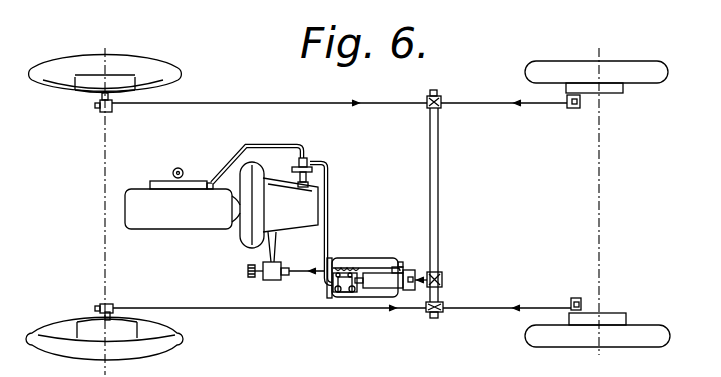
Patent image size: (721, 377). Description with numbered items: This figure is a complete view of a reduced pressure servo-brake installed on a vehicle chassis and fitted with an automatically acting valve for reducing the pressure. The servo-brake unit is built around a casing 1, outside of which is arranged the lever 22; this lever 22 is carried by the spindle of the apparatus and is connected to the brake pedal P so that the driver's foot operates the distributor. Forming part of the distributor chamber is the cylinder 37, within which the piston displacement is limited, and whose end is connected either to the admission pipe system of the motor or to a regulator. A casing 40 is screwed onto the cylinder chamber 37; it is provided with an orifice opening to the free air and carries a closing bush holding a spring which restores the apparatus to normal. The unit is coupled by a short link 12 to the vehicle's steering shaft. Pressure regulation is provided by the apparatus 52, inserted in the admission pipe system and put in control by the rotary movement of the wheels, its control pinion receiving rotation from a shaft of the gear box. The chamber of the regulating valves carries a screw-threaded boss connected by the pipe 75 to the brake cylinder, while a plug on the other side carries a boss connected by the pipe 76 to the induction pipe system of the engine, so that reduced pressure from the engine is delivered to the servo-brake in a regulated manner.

The casing 1 is at (383, 298).
The steering shaft collar 12 is at (422, 274).
The lever 22 is at (400, 266).
The cylinder 37 is at (352, 292).
The casing 40 is at (359, 272).
The pressure regulation apparatus 52 is at (294, 170).
The pipe 75 is at (328, 201).
The pipe 76 is at (227, 176).
The pedal P is at (250, 272).